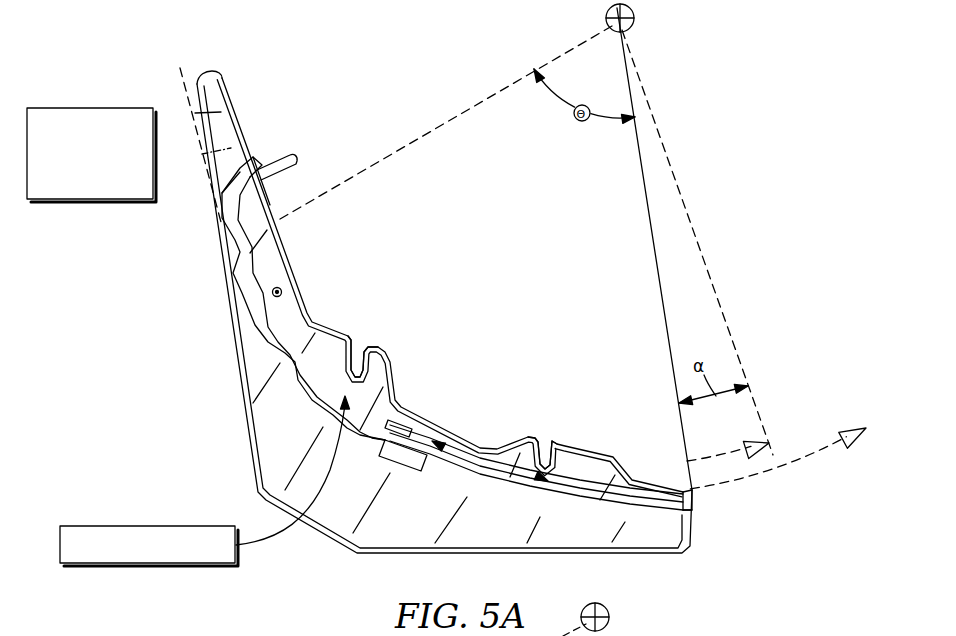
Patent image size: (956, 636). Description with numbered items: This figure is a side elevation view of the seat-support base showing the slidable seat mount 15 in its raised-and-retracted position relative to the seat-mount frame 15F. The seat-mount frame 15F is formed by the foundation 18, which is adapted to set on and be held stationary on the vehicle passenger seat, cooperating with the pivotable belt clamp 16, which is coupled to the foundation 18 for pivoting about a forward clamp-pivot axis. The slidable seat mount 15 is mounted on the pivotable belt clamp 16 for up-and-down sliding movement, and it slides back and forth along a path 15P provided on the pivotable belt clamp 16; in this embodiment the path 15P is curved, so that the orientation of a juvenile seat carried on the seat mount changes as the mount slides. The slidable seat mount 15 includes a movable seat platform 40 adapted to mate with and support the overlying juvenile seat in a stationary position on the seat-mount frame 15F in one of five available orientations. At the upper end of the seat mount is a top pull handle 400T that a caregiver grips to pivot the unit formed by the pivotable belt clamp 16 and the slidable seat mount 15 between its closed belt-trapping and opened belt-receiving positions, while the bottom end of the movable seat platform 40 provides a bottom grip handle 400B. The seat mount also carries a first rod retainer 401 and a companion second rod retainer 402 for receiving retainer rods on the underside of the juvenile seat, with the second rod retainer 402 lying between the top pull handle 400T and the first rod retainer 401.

The slidable seat mount 15 is at (596, 450).
The seat-mount frame 15F is at (90, 108).
The path 15P is at (482, 470).
The pivotable belt clamp 16 is at (243, 262).
The foundation 18 is at (88, 200).
The movable seat platform 40 is at (61, 528).
The top pull handle 400T is at (297, 158).
The bottom grip handle 400B is at (703, 504).
The first rod retainer 401 is at (553, 445).
The second rod retainer 402 is at (366, 342).